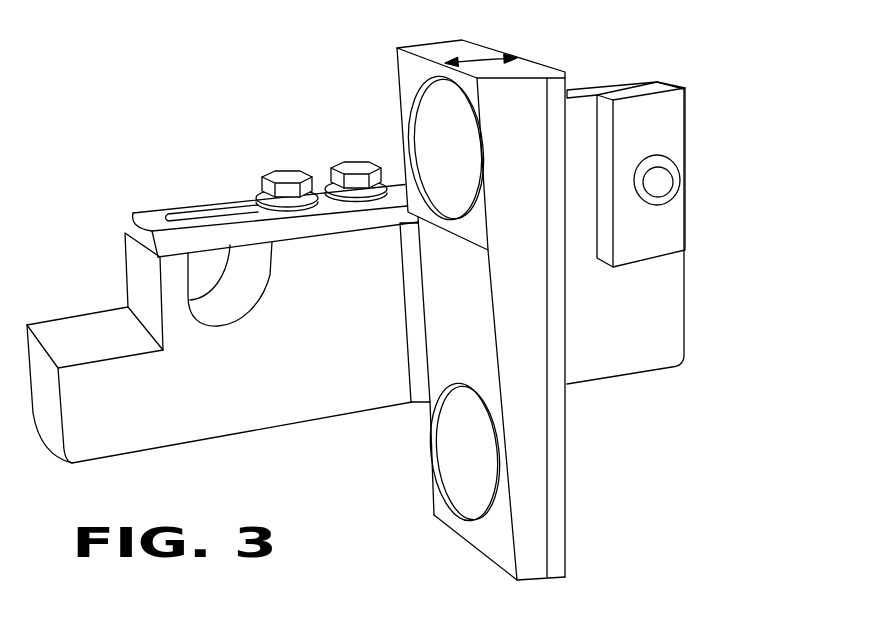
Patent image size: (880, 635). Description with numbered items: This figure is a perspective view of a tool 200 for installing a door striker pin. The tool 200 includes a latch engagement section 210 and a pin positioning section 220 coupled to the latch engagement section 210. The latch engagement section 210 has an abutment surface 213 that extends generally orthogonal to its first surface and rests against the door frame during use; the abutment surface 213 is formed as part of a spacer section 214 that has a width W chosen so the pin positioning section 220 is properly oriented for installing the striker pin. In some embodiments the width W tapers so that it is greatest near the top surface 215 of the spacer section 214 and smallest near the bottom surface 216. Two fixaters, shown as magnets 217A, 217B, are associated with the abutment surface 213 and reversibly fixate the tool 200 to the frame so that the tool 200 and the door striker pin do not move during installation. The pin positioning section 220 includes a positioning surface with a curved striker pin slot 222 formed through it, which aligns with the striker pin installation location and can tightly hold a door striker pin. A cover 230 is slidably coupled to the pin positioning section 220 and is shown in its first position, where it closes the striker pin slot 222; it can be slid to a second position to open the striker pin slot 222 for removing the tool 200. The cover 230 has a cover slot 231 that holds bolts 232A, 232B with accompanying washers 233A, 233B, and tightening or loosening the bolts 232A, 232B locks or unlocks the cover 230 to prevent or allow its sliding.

The tool 200 is at (707, 83).
The latch engagement section 210 is at (692, 173).
The abutment surface 213 is at (478, 333).
The spacer section 214 is at (525, 380).
The top surface 215 is at (436, 52).
The bottom surface 216 is at (480, 553).
The magnet 217A is at (458, 177).
The magnet 217B is at (462, 467).
The pin positioning section 220 is at (122, 295).
The striker pin slot 222 is at (227, 313).
The cover 230 is at (183, 209).
The cover slot 231 is at (173, 217).
The bolt 232A is at (357, 162).
The bolt 232B is at (285, 171).
The washer 233A is at (325, 180).
The washer 233B is at (257, 187).
The width W is at (481, 58).